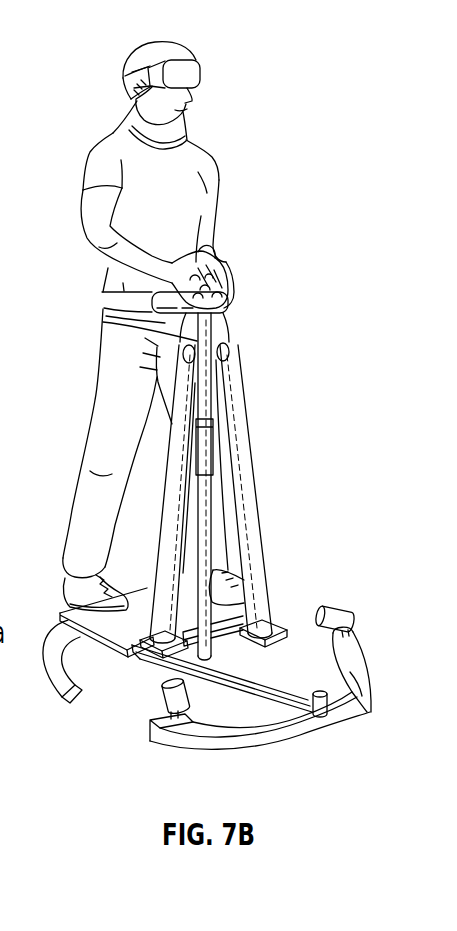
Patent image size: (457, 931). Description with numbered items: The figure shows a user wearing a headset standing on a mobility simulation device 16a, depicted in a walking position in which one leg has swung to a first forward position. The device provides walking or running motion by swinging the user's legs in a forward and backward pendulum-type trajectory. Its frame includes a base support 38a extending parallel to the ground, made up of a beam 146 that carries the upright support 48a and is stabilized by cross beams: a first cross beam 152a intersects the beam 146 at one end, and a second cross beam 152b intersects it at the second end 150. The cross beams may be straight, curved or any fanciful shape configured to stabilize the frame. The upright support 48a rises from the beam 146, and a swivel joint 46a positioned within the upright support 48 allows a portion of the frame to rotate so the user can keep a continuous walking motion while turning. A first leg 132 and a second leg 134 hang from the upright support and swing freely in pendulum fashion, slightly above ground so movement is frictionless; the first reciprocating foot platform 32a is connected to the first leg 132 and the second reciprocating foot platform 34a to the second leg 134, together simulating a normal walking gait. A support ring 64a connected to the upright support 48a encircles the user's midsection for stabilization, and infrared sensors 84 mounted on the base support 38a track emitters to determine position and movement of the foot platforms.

The mobility simulation device 16a is at (290, 463).
The first reciprocating foot platform 32a is at (68, 613).
The second reciprocating foot platform 34a is at (277, 620).
The base support 38a is at (362, 747).
The swivel joint 46a is at (204, 433).
The upright support 48a is at (216, 333).
The upright support 48 is at (328, 704).
The support ring 64a is at (108, 294).
The infrared sensor 84 is at (173, 693).
The first leg 132 is at (175, 470).
The second leg 134 is at (253, 527).
The beam 146 is at (228, 681).
The second end 150 is at (313, 702).
The first cross beam 152a is at (377, 662).
The second cross beam 152b is at (48, 643).